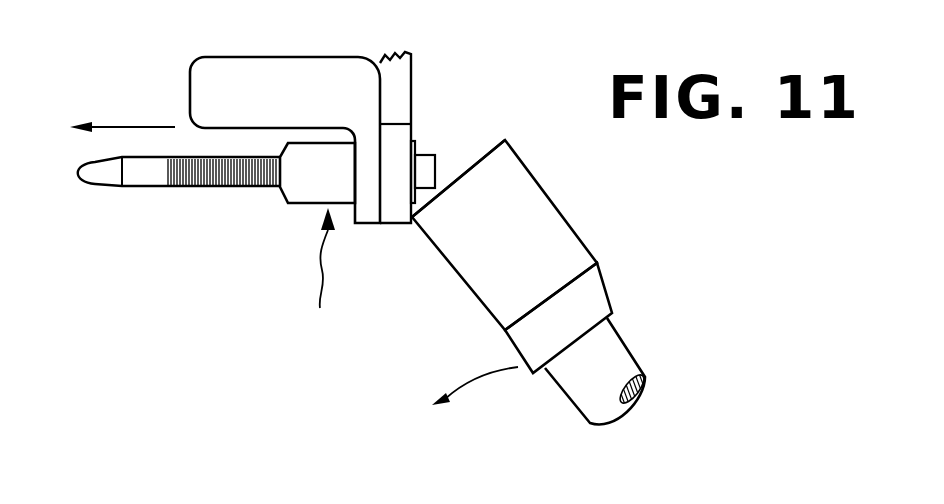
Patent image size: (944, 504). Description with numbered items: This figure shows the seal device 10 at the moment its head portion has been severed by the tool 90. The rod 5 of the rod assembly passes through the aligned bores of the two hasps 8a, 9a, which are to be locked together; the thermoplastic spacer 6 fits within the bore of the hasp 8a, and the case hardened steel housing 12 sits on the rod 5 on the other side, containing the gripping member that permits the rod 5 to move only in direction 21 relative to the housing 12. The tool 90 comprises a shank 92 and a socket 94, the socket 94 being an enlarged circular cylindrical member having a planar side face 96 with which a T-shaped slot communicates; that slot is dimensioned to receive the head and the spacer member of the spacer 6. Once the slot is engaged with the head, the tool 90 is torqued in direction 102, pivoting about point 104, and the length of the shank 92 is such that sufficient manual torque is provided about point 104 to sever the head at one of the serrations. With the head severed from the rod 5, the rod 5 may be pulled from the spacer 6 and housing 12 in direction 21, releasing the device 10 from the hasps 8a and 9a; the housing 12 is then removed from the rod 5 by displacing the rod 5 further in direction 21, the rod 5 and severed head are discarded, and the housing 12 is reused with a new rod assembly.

The rod 5 is at (148, 182).
The spacer 6 is at (425, 152).
The hasp 8a is at (412, 73).
The hasp 9a is at (315, 80).
The seal device 10 is at (337, 342).
The housing 12 is at (312, 193).
The direction 21 is at (128, 127).
The tool 90 is at (584, 282).
The shank 92 is at (627, 348).
The socket 94 is at (483, 250).
The planar side face 96 is at (483, 313).
The direction 102 is at (498, 383).
The point 104 is at (413, 220).